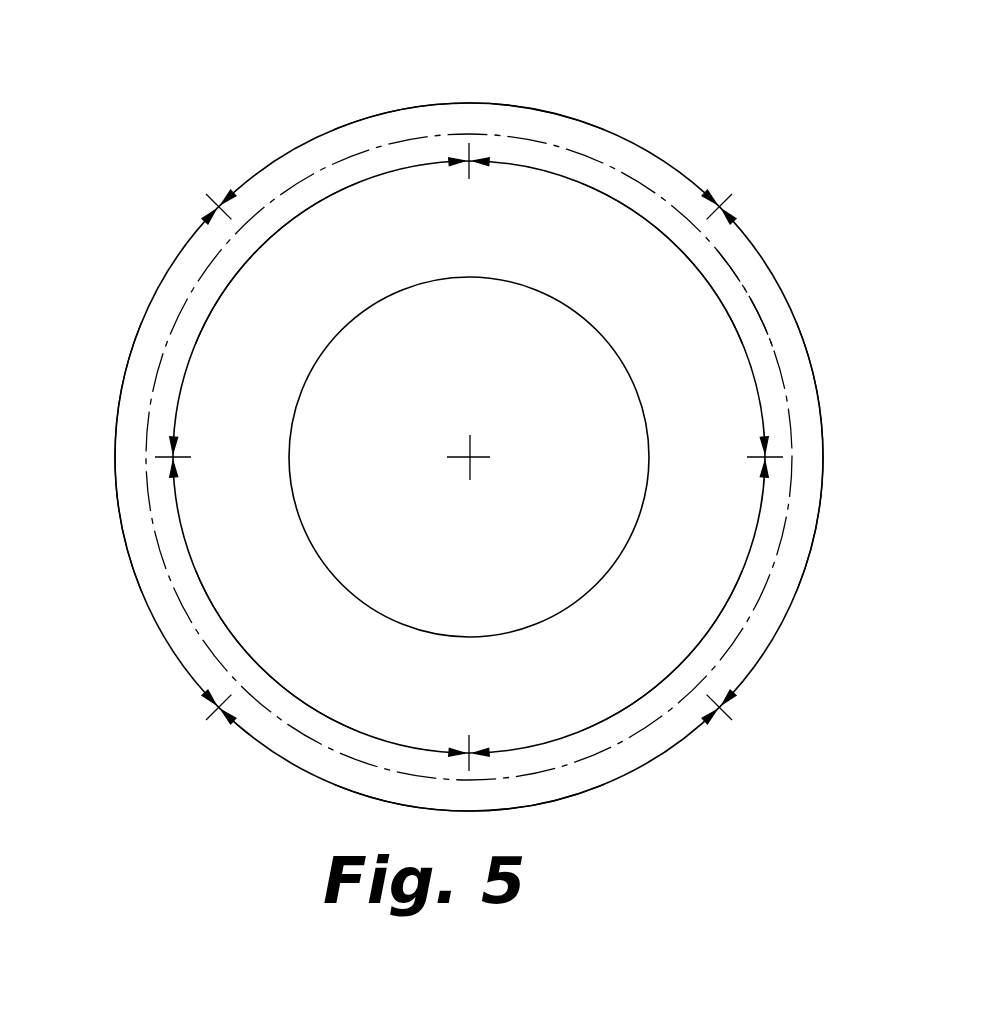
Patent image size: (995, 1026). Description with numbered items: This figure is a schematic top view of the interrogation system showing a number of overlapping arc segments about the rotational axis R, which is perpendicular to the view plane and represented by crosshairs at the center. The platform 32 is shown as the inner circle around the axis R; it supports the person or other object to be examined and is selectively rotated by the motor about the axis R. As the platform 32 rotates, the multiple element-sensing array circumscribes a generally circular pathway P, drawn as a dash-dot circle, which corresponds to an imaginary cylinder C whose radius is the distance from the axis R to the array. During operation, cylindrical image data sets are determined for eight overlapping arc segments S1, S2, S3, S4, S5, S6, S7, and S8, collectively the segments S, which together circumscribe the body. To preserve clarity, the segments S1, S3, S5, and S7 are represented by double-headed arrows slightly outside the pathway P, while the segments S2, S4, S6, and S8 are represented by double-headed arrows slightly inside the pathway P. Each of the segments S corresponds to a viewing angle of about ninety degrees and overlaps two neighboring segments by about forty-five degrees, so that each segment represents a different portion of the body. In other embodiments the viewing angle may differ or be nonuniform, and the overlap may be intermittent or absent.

The arc segments S is at (771, 682).
The imaginary cylinder C is at (773, 572).
The circular pathway P is at (752, 297).
The rotational axis R is at (490, 457).
The platform 32 is at (613, 350).
The first arc segment S1 is at (140, 325).
The second arc segment S2 is at (215, 308).
The third arc segment S3 is at (515, 107).
The fourth arc segment S4 is at (627, 208).
The fifth arc segment S5 is at (805, 347).
The sixth arc segment S6 is at (645, 690).
The seventh arc segment S7 is at (573, 797).
The eighth arc segment S8 is at (265, 667).